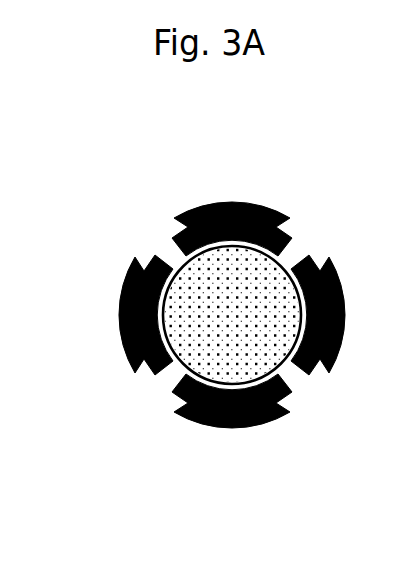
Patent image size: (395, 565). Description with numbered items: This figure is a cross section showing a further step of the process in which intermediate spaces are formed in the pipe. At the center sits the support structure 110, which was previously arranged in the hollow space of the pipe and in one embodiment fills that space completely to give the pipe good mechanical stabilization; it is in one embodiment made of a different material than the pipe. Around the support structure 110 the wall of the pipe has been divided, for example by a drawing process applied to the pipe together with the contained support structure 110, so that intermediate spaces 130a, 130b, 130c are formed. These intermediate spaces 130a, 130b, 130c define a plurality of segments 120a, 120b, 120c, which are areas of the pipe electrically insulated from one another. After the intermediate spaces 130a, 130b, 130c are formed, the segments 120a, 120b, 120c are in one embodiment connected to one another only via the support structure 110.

The support structure 110 is at (265, 283).
The segment 120a is at (223, 203).
The segment 120b is at (120, 337).
The segment 120c is at (233, 428).
The intermediate space 130a is at (166, 250).
The intermediate space 130b is at (170, 384).
The intermediate space 130c is at (303, 378).